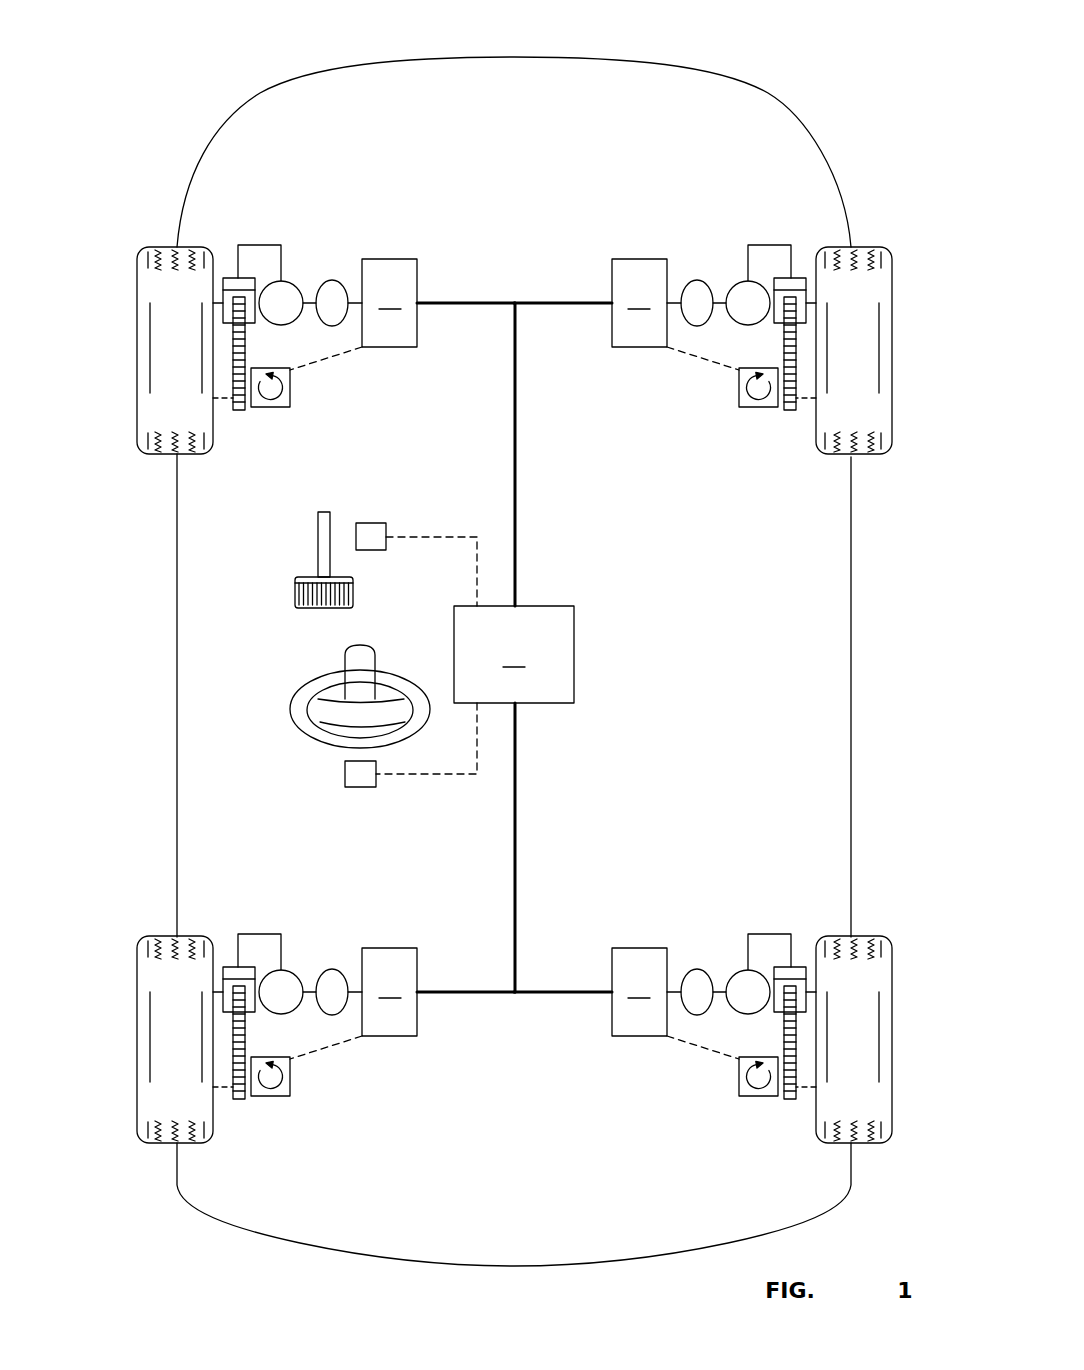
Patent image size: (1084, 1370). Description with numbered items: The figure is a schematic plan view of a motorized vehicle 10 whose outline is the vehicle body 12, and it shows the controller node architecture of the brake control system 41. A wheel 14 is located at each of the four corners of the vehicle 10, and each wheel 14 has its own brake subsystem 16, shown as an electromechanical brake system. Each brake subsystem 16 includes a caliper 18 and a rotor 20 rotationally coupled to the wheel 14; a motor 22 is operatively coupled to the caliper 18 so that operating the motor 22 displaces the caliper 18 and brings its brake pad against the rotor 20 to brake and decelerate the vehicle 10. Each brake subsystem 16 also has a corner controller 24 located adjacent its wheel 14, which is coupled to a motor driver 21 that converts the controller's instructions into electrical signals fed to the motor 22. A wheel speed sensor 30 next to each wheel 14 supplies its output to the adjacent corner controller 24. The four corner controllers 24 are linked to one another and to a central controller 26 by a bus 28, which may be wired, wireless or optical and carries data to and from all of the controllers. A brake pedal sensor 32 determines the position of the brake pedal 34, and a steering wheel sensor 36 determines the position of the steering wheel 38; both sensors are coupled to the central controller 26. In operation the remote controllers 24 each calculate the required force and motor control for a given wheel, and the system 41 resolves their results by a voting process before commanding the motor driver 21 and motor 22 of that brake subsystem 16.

The vehicle 10 is at (514, 645).
The vehicle body 12 is at (815, 150).
The wheel 14 is at (140, 453).
The brake subsystem 16 is at (514, 703).
The caliper 18 is at (236, 278).
The rotor 20 is at (238, 410).
The motor driver 21 is at (335, 280).
The motor 22 is at (285, 281).
The corner controller 24 is at (514, 647).
The central controller 26 is at (514, 654).
The bus 28 is at (515, 534).
The wheel speed sensor 30 is at (268, 407).
The brake pedal sensor 32 is at (381, 523).
The brake pedal 34 is at (323, 549).
The steering wheel sensor 36 is at (350, 789).
The steering wheel 38 is at (303, 695).
The system 41 is at (203, 712).